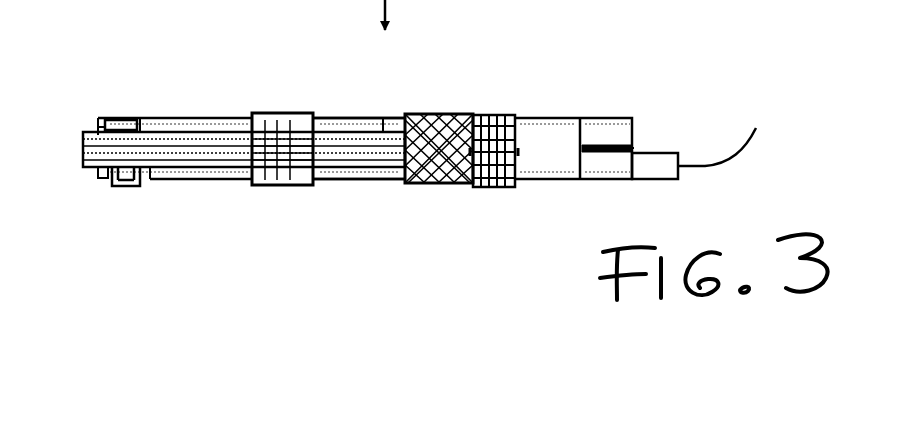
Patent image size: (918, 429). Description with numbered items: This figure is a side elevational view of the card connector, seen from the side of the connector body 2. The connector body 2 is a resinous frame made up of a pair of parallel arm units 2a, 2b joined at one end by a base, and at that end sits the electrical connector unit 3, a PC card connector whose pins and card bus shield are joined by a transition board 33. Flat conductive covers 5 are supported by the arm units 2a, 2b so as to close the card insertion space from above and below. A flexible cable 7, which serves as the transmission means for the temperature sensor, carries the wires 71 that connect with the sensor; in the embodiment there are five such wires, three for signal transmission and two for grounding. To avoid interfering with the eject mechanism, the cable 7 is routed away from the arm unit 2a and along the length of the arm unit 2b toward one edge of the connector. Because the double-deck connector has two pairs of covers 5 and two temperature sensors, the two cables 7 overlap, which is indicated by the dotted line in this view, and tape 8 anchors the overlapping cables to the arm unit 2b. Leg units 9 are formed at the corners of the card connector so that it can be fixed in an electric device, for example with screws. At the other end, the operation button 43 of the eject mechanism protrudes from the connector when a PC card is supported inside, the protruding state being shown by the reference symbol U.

The connector body 2 is at (198, 181).
The arm unit 2a is at (562, 135).
The arm unit 2b is at (150, 128).
The electrical connector unit 3 is at (128, 108).
The cover 5 is at (354, 118).
The flexible cable 7 is at (83, 155).
The wires 71 is at (383, 118).
The tape 8 is at (286, 185).
The leg units 9 is at (116, 186).
The transition board 33 is at (103, 178).
The operation button 43 is at (634, 166).
The protrusion of operation button U is at (724, 136).